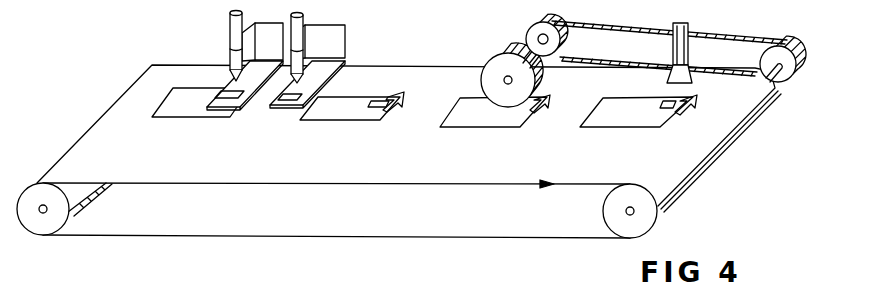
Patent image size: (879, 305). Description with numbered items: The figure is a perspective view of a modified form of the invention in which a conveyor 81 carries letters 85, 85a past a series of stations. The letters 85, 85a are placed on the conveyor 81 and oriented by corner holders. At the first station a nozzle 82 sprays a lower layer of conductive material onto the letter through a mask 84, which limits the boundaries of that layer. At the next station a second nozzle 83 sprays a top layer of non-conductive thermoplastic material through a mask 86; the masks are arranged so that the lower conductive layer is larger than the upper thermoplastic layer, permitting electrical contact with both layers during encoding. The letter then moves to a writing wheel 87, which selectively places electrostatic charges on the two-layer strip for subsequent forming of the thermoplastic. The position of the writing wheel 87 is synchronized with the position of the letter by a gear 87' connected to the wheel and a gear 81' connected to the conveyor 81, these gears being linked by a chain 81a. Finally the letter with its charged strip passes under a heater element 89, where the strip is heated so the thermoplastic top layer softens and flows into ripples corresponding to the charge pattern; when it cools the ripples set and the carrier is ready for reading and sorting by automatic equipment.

The conveyor 81 is at (399, 151).
The gear 81' is at (783, 81).
The chain 81a is at (763, 40).
The nozzle 82 is at (229, 50).
The nozzle 83 is at (303, 50).
The mask 84 is at (230, 110).
The letter 85 is at (183, 118).
The letter 85a is at (337, 122).
The mask 86 is at (281, 108).
The writing wheel 87 is at (499, 72).
The gear 87' is at (564, 41).
The heater element 89 is at (690, 64).